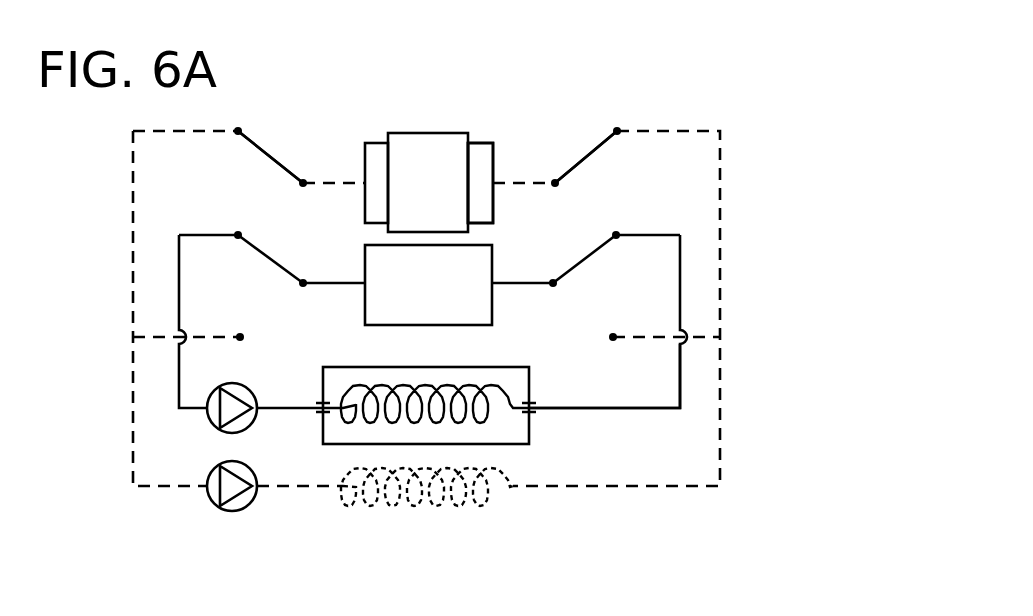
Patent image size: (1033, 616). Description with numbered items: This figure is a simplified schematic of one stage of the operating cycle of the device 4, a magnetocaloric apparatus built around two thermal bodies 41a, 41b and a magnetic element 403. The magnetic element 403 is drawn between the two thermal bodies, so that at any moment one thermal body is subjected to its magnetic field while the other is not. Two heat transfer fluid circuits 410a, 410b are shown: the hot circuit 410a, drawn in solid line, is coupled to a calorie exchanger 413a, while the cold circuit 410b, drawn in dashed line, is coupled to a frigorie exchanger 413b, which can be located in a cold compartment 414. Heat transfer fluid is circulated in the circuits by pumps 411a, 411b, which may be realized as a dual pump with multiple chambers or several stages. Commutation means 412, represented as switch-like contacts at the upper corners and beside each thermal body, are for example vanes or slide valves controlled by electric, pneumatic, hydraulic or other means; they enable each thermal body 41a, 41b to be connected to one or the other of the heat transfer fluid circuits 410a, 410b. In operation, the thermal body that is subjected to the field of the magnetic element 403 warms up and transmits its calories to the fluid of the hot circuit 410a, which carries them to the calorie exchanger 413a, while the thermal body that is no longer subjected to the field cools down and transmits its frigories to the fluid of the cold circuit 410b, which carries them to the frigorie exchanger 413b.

The device 4 is at (684, 126).
The magnetic element 403 is at (429, 182).
The thermal body 41a is at (483, 165).
The commutation means 412 is at (533, 178).
The thermal body 41b is at (457, 273).
The hot circuit 410a is at (722, 244).
The cold circuit 410b is at (682, 388).
The pump 411a is at (253, 507).
The pump 411b is at (210, 423).
The calorie exchanger 413a is at (440, 502).
The frigorie exchanger 413b is at (485, 422).
The cold compartment 414 is at (530, 425).